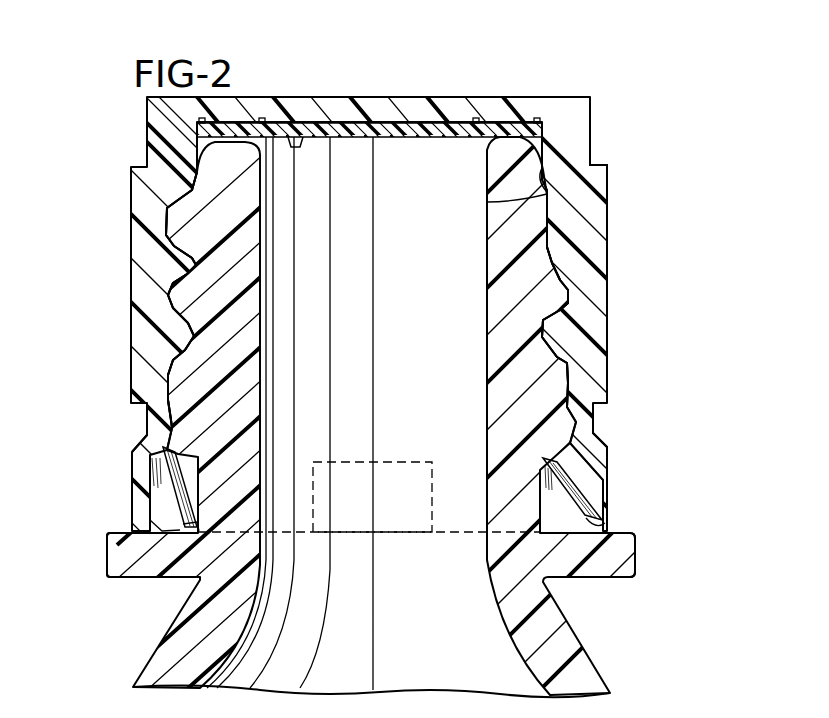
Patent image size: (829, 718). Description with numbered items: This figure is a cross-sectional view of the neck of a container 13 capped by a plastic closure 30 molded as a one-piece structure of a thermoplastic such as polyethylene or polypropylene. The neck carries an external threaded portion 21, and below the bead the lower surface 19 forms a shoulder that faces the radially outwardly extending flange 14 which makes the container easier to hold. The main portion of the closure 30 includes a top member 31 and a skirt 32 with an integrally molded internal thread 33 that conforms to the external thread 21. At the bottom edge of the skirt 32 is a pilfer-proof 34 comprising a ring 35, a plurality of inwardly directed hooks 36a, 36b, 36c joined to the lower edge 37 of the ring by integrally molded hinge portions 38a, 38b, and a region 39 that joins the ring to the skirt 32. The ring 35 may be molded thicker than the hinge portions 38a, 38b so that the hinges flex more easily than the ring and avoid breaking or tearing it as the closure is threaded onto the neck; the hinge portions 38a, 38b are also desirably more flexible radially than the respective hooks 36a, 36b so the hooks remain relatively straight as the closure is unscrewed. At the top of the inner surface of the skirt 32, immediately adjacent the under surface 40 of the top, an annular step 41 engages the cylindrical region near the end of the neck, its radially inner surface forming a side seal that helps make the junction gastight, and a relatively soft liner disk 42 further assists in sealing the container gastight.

The container 13 is at (570, 620).
The flange 14 is at (634, 557).
The lower surface 19 is at (488, 478).
The threaded portion 21 is at (546, 319).
The plastic closure 30 is at (598, 108).
The top member 31 is at (398, 96).
The skirt 32 is at (607, 177).
The internal thread 33 is at (560, 265).
The pilfer-proof 34 is at (606, 444).
The ring 35 is at (605, 472).
The hook 36a is at (173, 481).
The hook 36b is at (583, 491).
The hook 36c is at (401, 462).
The lower edge 37 is at (187, 531).
The hinge portion 38a is at (148, 526).
The hinge portion 38b is at (600, 521).
The region 39 is at (147, 423).
The under surface 40 is at (297, 136).
The annular step 41 is at (543, 184).
The liner disk 42 is at (384, 140).